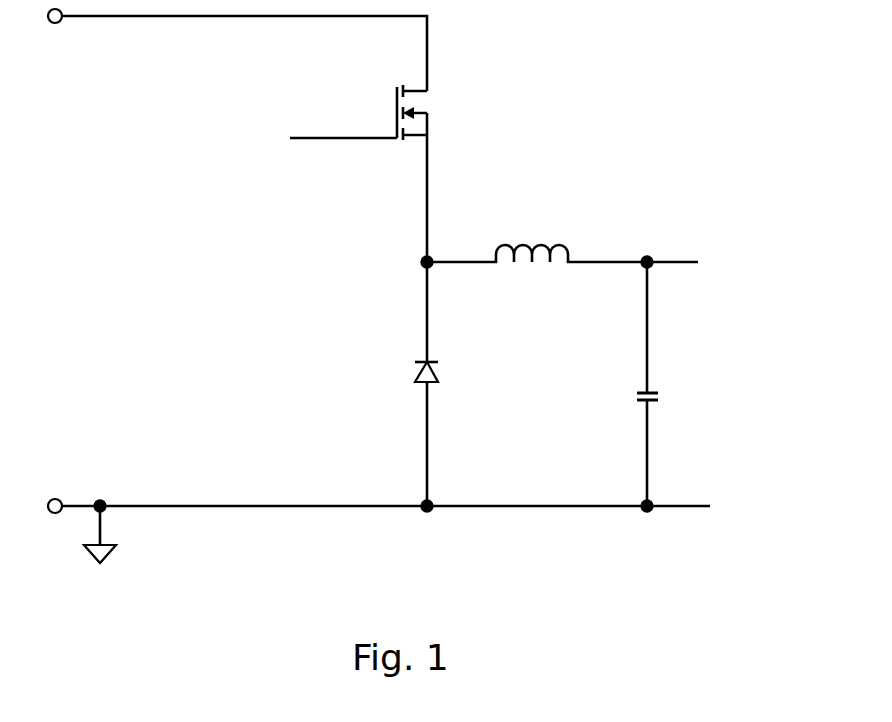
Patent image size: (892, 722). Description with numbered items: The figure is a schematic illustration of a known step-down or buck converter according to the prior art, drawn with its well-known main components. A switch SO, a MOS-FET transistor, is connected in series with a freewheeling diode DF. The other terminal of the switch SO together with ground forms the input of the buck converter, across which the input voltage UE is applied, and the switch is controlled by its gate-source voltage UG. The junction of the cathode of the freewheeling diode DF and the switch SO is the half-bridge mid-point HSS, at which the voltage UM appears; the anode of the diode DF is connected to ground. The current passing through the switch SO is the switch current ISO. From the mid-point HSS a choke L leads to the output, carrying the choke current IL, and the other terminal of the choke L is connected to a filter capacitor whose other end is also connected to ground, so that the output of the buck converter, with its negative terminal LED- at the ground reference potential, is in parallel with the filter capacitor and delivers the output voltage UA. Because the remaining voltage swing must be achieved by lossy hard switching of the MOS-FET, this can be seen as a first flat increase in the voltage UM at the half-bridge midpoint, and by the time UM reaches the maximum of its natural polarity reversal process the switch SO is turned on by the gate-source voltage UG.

The input voltage UE is at (35, 38).
The gate-source voltage UG is at (321, 140).
The switch SO is at (436, 173).
The switch current ISO is at (427, 207).
The half-bridge mid-point HSS is at (397, 265).
The choke L is at (540, 239).
The choke current IL is at (617, 262).
The negative output terminal LED- is at (704, 507).
The output voltage UA is at (767, 283).
The voltage at the half-bridge midpoint UM is at (347, 484).
The freewheeling diode DF is at (444, 387).